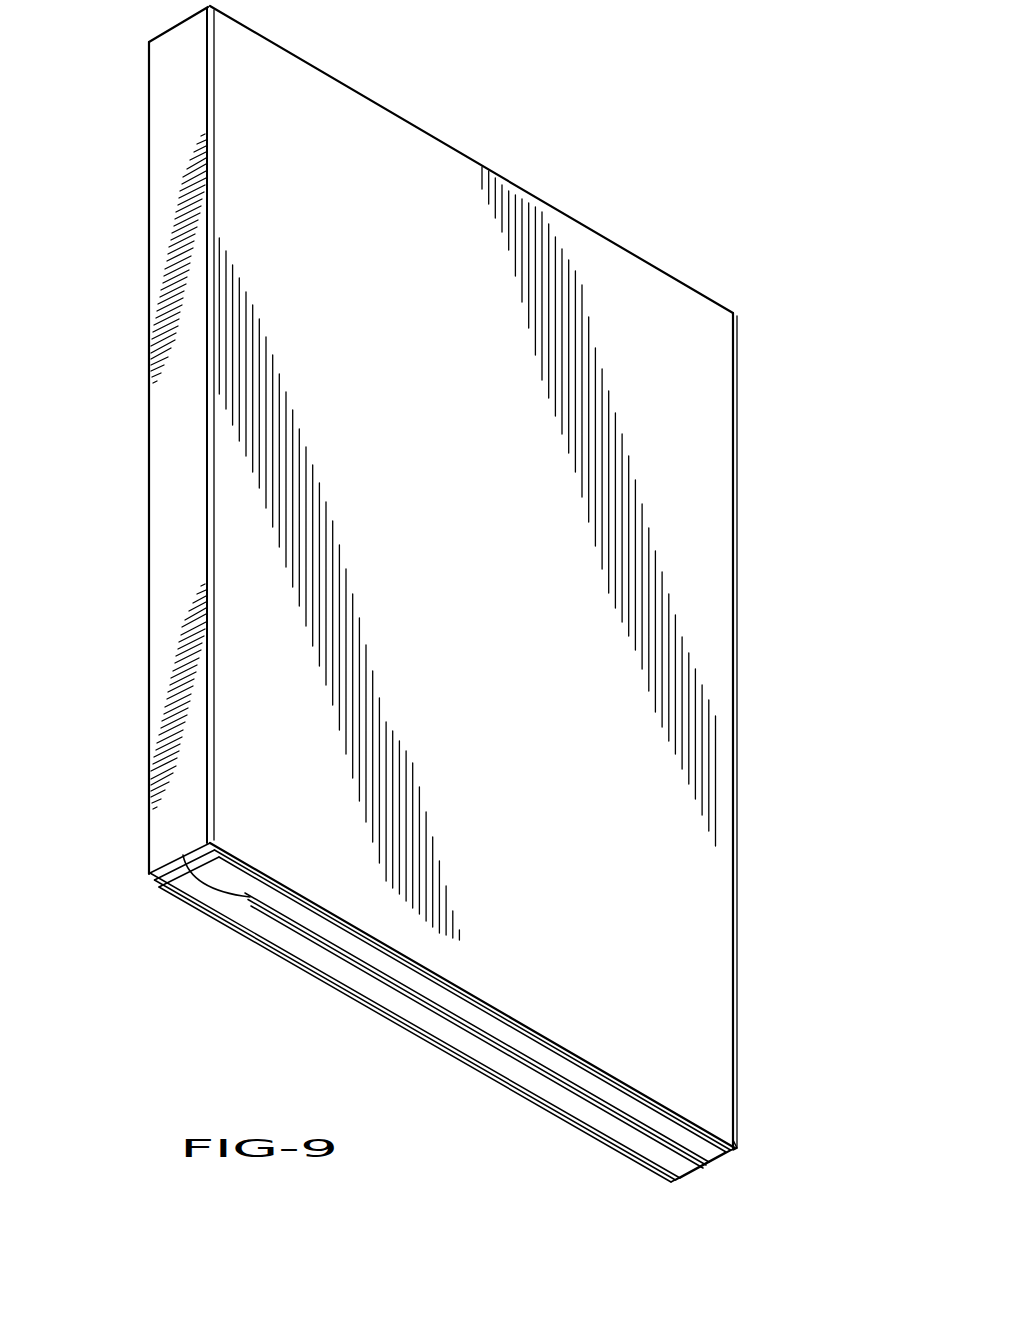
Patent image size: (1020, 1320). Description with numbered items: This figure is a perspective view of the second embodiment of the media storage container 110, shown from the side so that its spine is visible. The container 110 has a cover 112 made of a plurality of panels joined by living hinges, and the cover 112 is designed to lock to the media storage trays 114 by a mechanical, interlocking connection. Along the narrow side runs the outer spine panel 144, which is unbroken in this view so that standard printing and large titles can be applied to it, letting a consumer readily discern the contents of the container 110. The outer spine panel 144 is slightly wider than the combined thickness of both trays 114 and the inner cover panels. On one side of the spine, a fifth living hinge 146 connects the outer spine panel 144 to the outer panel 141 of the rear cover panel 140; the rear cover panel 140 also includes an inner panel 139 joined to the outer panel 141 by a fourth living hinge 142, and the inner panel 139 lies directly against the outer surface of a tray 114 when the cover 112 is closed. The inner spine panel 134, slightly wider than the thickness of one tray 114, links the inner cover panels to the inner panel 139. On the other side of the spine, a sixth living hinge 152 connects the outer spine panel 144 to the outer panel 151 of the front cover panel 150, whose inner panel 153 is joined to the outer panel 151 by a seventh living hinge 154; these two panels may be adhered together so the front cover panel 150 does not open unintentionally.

The media storage container 110 is at (586, 116).
The cover 112 is at (664, 264).
The media storage tray 114 is at (566, 1058).
The inner spine panel 134 is at (172, 866).
The inner panel 139 is at (297, 953).
The rear cover panel 140 is at (268, 948).
The outer panel 141 is at (367, 1002).
The fourth living hinge 142 is at (672, 1182).
The outer spine panel 144 is at (180, 442).
The fifth living hinge 146 is at (150, 650).
The front cover panel 150 is at (694, 520).
The outer panel 151 is at (515, 1018).
The sixth living hinge 152 is at (210, 510).
The inner panel 153 is at (482, 1004).
The seventh living hinge 154 is at (742, 1106).